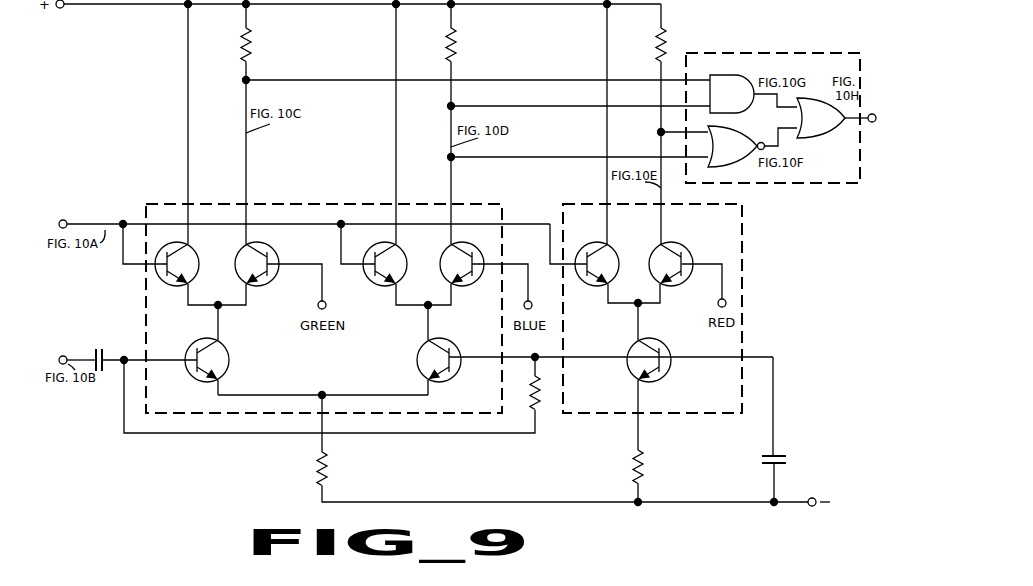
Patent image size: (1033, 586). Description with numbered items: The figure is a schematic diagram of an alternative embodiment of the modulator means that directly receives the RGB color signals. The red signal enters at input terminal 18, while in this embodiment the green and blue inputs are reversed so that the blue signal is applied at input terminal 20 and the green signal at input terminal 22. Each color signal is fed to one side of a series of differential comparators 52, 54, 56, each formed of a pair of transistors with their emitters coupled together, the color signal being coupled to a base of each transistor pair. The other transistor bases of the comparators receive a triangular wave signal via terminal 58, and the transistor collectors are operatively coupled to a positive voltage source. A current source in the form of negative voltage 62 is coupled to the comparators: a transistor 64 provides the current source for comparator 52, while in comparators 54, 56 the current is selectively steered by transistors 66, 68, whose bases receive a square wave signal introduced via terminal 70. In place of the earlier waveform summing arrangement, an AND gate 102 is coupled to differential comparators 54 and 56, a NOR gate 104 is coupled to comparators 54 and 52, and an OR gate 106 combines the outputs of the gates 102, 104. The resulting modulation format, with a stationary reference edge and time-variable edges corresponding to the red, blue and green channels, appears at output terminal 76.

The input terminal 18 is at (717, 303).
The input terminal 20 is at (532, 300).
The input terminal 22 is at (326, 303).
The differential comparator 52 is at (616, 315).
The differential comparator 54 is at (411, 316).
The differential comparator 56 is at (245, 316).
The terminal 58 is at (63, 219).
The negative voltage 62 is at (812, 497).
The transistor 64 is at (674, 371).
The transistor 66 is at (457, 347).
The transistor 68 is at (186, 373).
The terminal 70 is at (63, 355).
The output terminal 76 is at (874, 113).
The AND gate 102 is at (727, 70).
The NOR gate 104 is at (743, 168).
The OR gate 106 is at (830, 141).